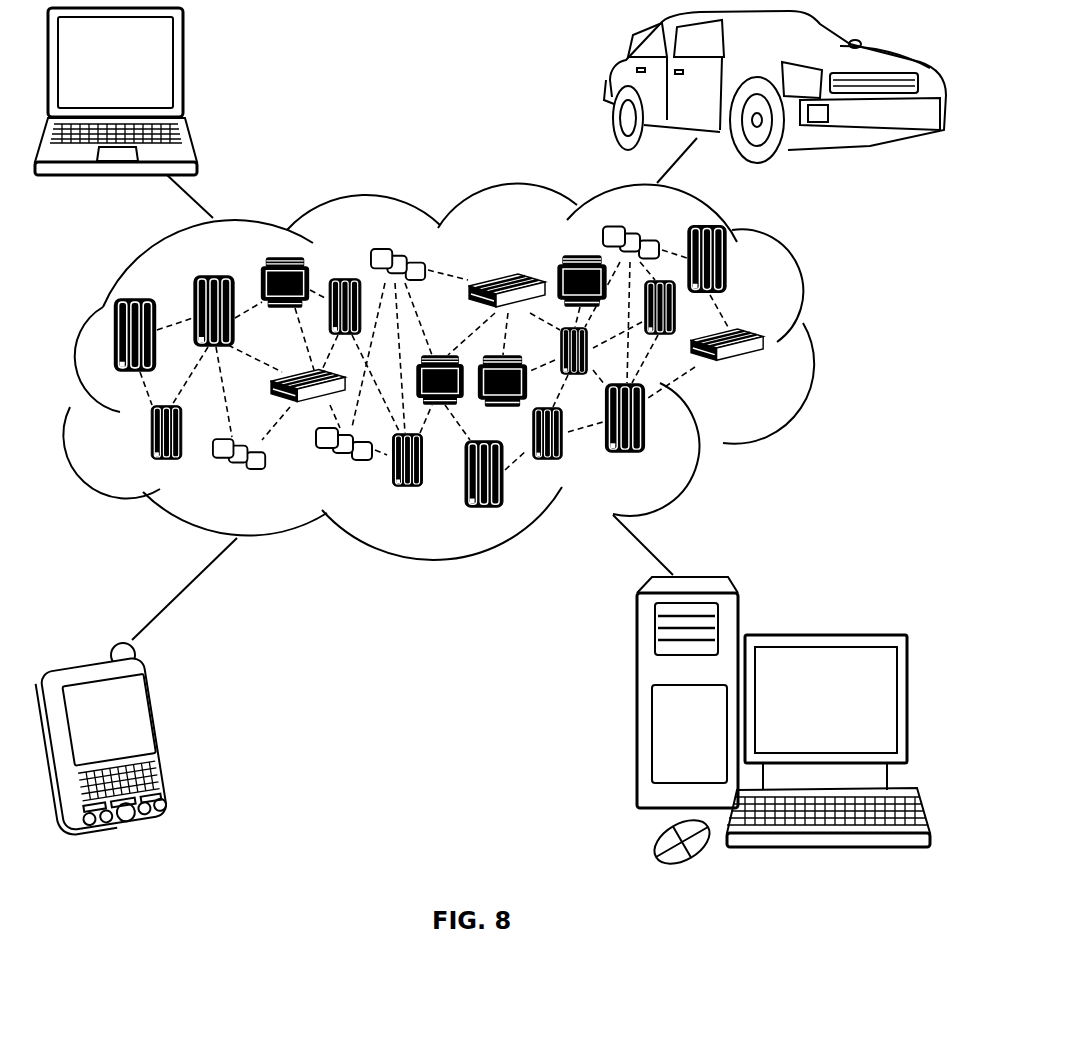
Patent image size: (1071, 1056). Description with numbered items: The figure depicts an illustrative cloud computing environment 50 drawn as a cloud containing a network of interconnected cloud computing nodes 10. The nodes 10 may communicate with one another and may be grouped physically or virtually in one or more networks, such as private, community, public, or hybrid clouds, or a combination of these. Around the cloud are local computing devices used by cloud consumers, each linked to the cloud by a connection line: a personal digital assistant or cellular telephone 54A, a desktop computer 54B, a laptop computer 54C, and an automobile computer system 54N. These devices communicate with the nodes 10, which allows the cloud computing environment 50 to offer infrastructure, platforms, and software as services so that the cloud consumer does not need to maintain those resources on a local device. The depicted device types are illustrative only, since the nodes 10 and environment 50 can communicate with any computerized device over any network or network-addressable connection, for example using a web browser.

The cloud computing nodes 10 is at (487, 366).
The cloud computing environment 50 is at (830, 338).
The personal digital assistant (PDA) or cellular telephone 54A is at (170, 730).
The desktop computer 54B is at (822, 635).
The laptop computer 54C is at (183, 71).
The automobile computer system 54N is at (610, 90).